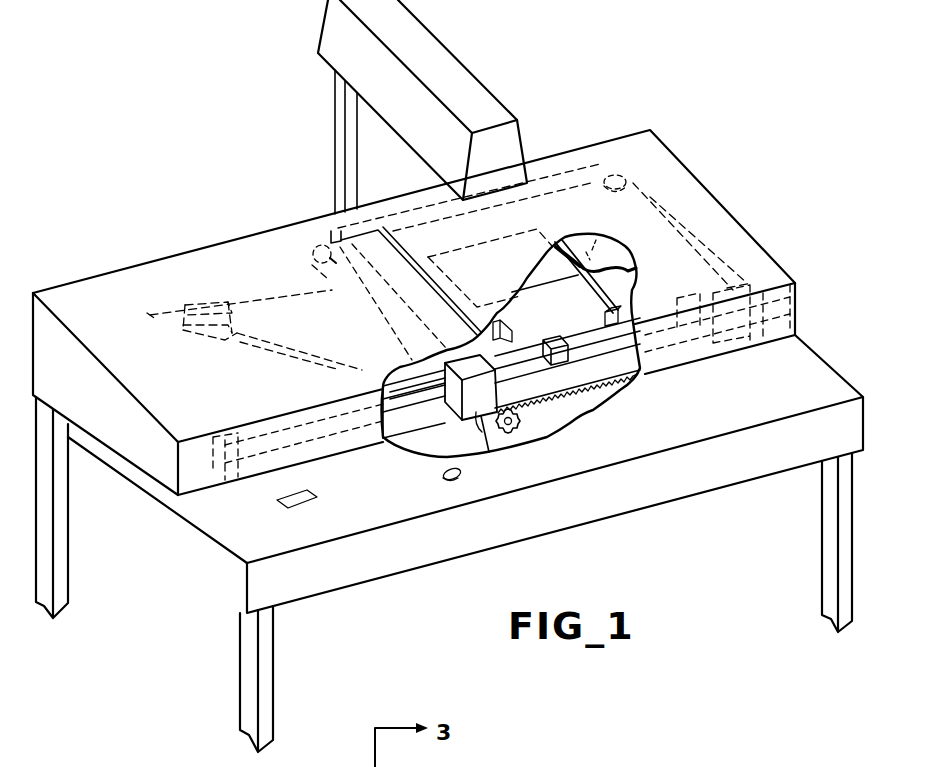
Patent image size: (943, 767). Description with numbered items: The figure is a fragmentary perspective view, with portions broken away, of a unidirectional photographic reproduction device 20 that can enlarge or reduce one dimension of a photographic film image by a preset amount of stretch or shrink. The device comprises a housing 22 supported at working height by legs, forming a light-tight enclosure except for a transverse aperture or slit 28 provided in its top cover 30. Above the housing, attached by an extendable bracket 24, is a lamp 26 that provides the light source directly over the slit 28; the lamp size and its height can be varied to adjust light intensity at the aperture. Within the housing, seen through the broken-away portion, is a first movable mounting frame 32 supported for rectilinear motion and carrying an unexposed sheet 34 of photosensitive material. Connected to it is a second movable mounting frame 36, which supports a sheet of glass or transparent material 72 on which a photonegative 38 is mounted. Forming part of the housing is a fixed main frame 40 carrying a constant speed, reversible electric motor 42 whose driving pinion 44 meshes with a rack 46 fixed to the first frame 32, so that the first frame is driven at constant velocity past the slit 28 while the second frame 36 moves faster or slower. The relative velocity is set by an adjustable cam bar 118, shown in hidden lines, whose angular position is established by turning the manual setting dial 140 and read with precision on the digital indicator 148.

The unidirectional photographic reproduction device 20 is at (656, 108).
The housing 22 is at (752, 233).
The extendable bracket 24 is at (338, 148).
The lamp 26 is at (485, 97).
The transverse aperture or slit 28 is at (328, 238).
The top cover 30 is at (151, 303).
The first movable mounting frame 32 is at (325, 265).
The unexposed sheet of photosensitive material 34 is at (533, 282).
The second movable mounting frame 36 is at (605, 165).
The photonegative 38 is at (593, 240).
The fixed main frame 40 is at (511, 398).
The constant speed reversible electric motor 42 is at (491, 445).
The driving pinion 44 is at (520, 420).
The rack 46 is at (553, 395).
The sheet of glass or transparent material 72 is at (610, 257).
The adjustable cam bar 118 is at (270, 307).
The manual setting dial 140 is at (440, 477).
The digital indicator 148 is at (300, 493).